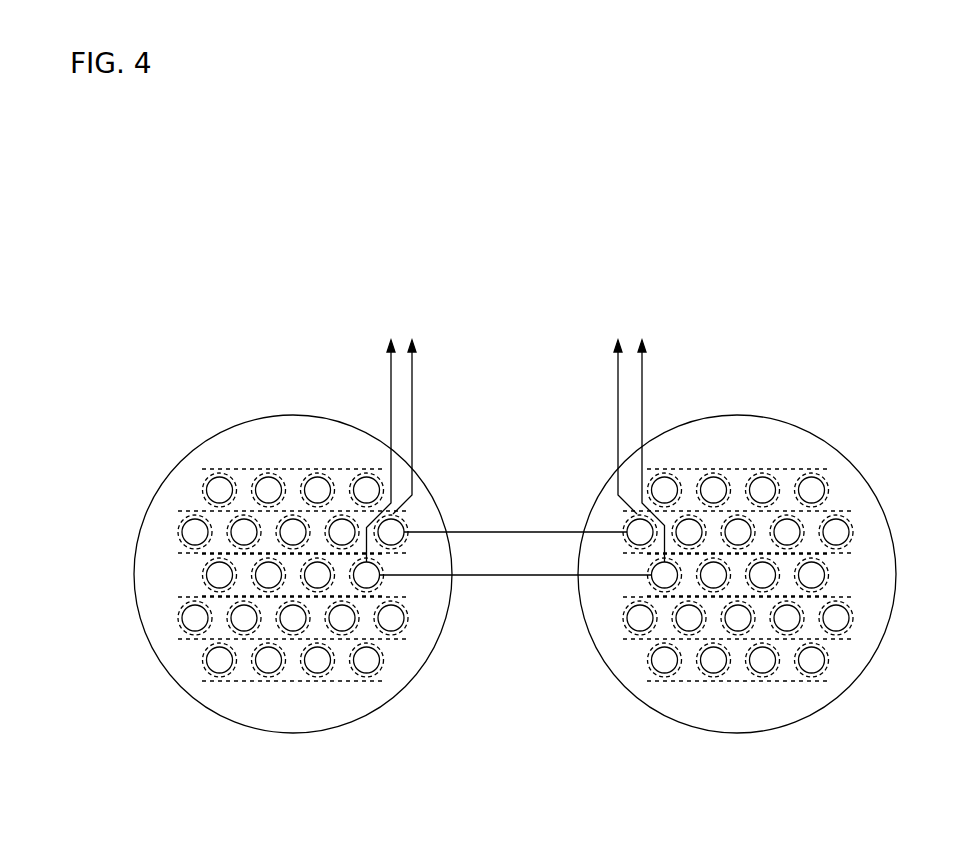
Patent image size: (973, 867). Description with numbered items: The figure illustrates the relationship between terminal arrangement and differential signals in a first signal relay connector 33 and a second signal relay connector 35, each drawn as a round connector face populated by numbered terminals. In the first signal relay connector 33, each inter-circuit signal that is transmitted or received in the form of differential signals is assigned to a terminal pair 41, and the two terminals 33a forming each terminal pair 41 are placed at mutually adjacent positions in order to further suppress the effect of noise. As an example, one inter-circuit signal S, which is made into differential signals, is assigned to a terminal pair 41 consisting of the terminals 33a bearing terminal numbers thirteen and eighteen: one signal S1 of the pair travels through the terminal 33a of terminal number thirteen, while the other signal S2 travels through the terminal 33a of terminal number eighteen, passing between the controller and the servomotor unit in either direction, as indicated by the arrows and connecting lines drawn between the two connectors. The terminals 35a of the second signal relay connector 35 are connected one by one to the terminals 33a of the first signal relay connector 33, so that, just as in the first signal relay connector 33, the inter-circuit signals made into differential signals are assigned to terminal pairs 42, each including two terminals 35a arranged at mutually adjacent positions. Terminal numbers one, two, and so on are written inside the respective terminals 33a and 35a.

The first signal relay connector 33 is at (804, 431).
The second signal relay connector 35 is at (226, 431).
The terminal 33a is at (636, 550).
The terminal 35a is at (178, 625).
The terminal pair 41 is at (620, 520).
The terminal pair 42 is at (200, 575).
The inter-circuit signal S is at (588, 306).
The signal S1 is at (651, 436).
The signal S2 is at (614, 412).